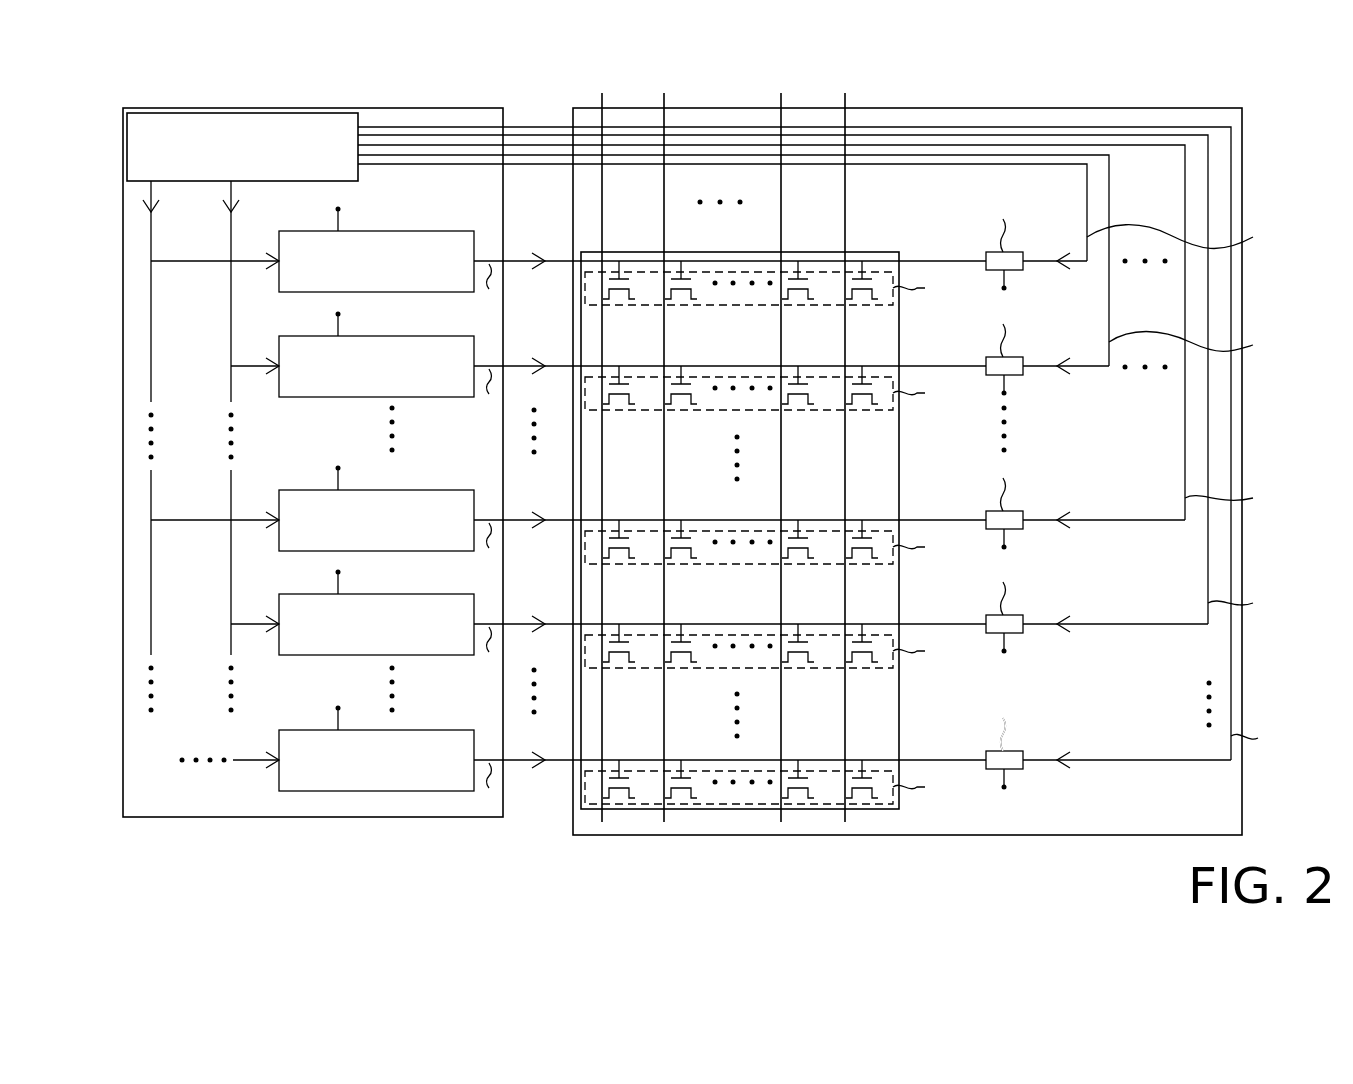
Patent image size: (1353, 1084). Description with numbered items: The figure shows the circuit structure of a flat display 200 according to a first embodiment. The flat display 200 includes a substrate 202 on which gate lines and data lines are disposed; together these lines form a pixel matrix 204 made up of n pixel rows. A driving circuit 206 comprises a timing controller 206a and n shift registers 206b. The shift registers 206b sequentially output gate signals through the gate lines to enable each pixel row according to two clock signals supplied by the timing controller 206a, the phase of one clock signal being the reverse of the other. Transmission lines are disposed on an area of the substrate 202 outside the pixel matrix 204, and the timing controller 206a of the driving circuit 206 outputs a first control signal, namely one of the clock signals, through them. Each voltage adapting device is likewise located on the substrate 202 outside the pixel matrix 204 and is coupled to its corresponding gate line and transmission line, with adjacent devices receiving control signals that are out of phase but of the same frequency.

The flat display 200 is at (95, 901).
The substrate 202 is at (922, 835).
The pixel matrix 204 is at (693, 809).
The driving circuit 206 is at (310, 817).
The timing controller 206a is at (268, 172).
The shift register 206b is at (400, 785).